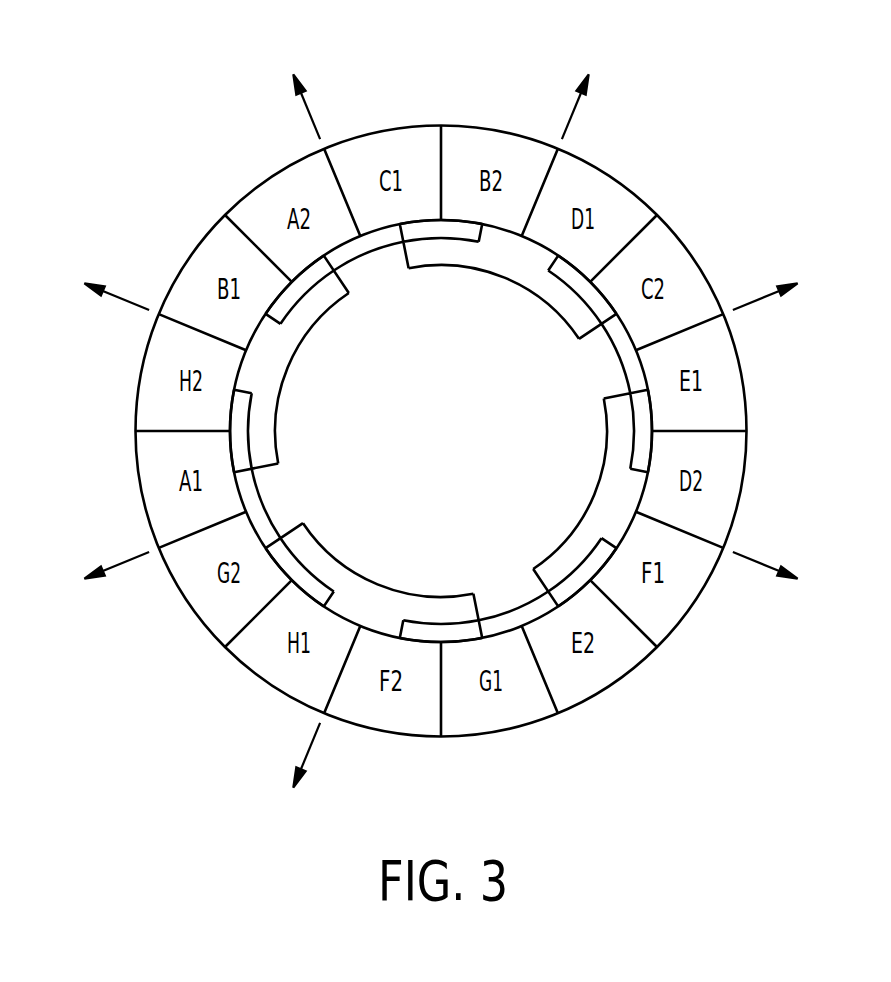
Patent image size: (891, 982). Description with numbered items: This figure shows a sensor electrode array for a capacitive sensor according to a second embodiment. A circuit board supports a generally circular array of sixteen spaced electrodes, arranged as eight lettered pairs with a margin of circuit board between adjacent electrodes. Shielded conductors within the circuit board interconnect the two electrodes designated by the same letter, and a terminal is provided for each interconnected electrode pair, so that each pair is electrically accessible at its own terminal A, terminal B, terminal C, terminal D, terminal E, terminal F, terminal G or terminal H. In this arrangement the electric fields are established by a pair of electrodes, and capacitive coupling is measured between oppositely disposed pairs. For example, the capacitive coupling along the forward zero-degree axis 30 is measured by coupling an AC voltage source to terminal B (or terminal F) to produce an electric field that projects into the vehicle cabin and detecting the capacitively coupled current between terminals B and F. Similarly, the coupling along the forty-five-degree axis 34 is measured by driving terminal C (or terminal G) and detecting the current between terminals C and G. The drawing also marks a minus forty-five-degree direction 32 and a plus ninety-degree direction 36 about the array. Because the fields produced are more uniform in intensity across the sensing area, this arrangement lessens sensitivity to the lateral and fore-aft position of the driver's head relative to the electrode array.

The 0° axis 30 is at (310, 107).
The -45 degree direction arrow 32 is at (128, 293).
The 45° axis 34 is at (575, 107).
The +90 degree direction arrow 36 is at (758, 297).
The terminal A is at (291, 363).
The terminal B is at (373, 253).
The terminal C is at (503, 280).
The terminal D is at (617, 360).
The terminal E is at (590, 490).
The terminal F is at (510, 598).
The terminal G is at (378, 578).
The terminal H is at (270, 497).